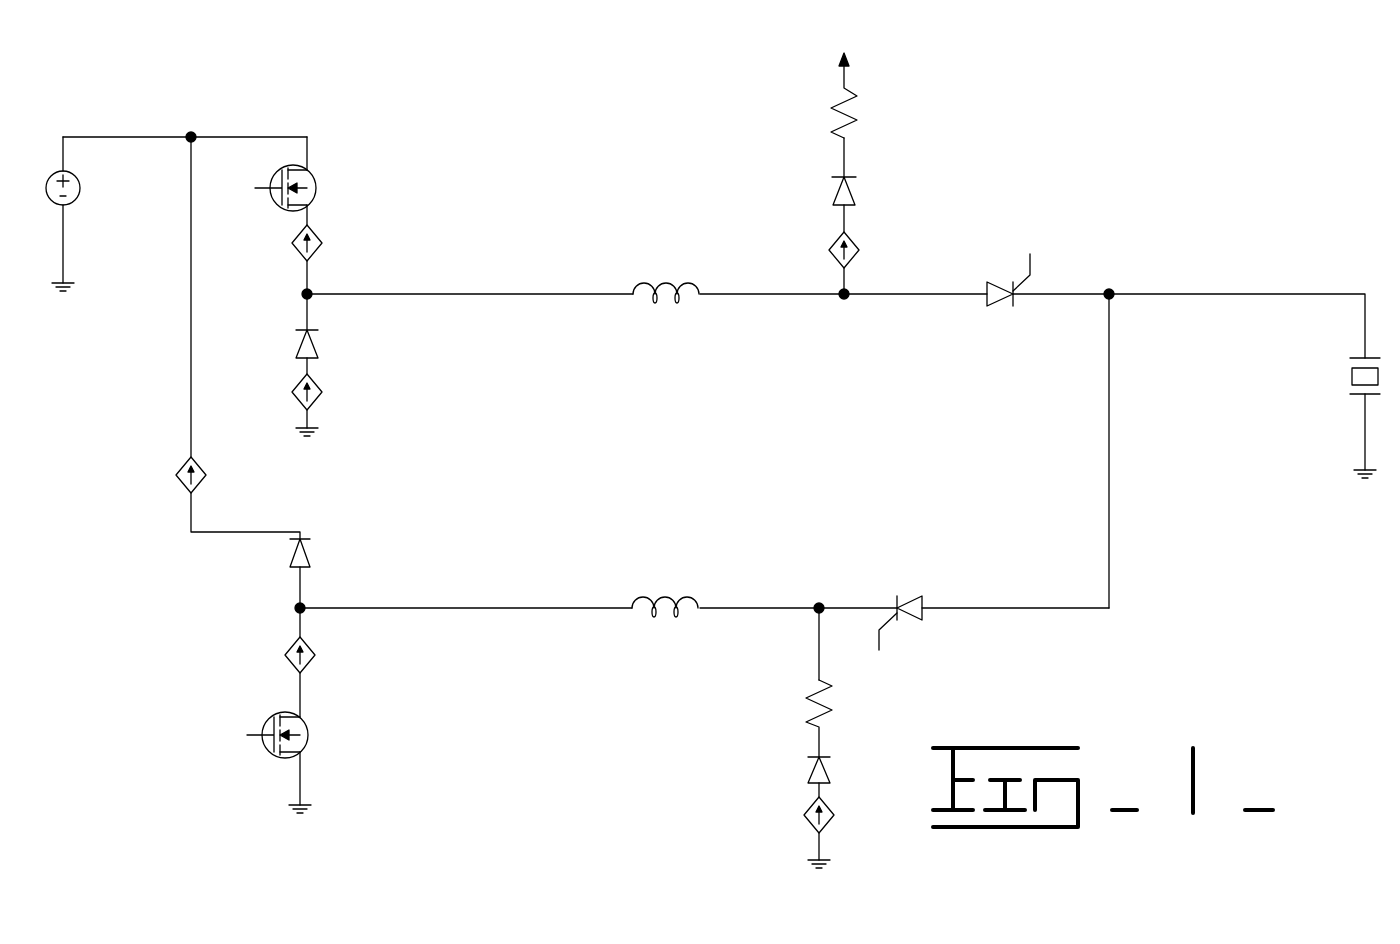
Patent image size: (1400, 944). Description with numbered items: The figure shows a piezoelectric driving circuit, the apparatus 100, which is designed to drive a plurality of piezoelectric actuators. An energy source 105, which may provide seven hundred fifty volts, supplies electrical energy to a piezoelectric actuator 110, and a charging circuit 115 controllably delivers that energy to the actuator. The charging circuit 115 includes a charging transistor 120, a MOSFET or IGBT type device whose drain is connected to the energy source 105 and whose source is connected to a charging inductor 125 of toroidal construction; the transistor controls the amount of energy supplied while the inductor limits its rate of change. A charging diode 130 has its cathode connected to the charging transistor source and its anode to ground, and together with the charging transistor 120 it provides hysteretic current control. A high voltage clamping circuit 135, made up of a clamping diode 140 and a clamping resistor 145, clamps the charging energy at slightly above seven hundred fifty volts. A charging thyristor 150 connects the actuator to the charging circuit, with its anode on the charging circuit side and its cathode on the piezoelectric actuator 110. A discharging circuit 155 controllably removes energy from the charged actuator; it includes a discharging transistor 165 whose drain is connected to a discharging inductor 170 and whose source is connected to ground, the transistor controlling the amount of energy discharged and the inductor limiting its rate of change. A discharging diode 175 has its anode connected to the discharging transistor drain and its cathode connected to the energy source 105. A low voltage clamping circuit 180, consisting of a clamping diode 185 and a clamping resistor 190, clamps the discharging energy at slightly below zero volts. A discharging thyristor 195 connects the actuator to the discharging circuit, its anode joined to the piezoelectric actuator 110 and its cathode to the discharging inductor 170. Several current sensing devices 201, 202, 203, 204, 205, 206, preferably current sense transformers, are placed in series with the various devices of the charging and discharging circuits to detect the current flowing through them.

The apparatus 100 is at (130, 630).
The energy source 105 is at (72, 172).
The piezoelectric actuator 110 is at (1352, 358).
The charging circuit 115 is at (531, 167).
The charging transistor 120 is at (312, 173).
The charging inductor 125 is at (695, 280).
The charging diode 130 is at (318, 330).
The high voltage clamping circuit 135 is at (847, 160).
The clamping diode 140 is at (852, 192).
The clamping resistor 145 is at (831, 100).
The charging thyristor 150 is at (990, 282).
The discharging circuit 155 is at (556, 700).
The discharging transistor 165 is at (278, 716).
The discharging inductor 170 is at (690, 594).
The discharging diode 175 is at (310, 556).
The low voltage clamping circuit 180 is at (822, 744).
The clamping diode 185 is at (808, 776).
The clamping resistor 190 is at (808, 696).
The discharging thyristor 195 is at (915, 596).
The current sensing device 201 is at (318, 238).
The current sensing device 202 is at (318, 388).
The current sensing device 203 is at (835, 240).
The current sensing device 204 is at (314, 648).
The current sensing device 205 is at (187, 462).
The current sensing device 206 is at (806, 814).